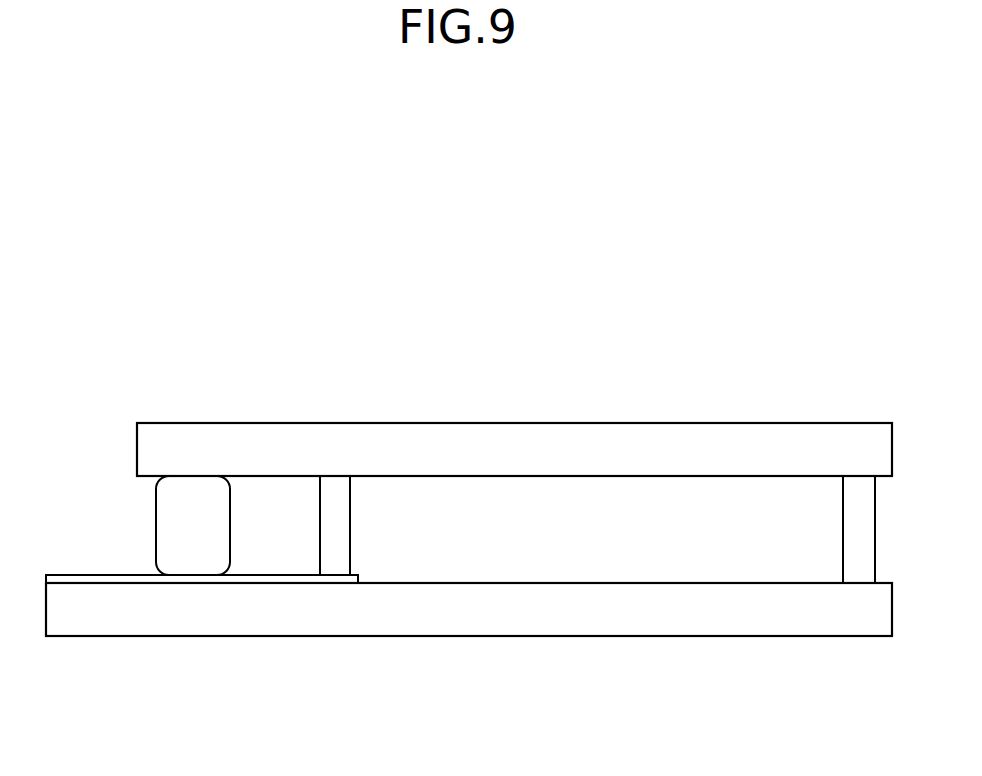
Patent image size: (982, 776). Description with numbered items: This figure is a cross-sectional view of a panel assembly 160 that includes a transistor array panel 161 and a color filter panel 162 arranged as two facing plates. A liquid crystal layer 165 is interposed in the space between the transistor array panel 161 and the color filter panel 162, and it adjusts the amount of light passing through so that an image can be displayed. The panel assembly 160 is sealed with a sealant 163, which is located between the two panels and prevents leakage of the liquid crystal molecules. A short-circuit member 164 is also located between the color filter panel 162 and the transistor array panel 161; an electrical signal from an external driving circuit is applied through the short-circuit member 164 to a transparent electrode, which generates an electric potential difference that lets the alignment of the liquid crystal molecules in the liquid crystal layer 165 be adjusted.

The panel assembly 160 is at (719, 364).
The transistor array panel 161 is at (540, 612).
The color filter panel 162 is at (508, 441).
The sealant 163 is at (330, 490).
The short-circuit member 164 is at (192, 492).
The liquid crystal layer 165 is at (750, 547).